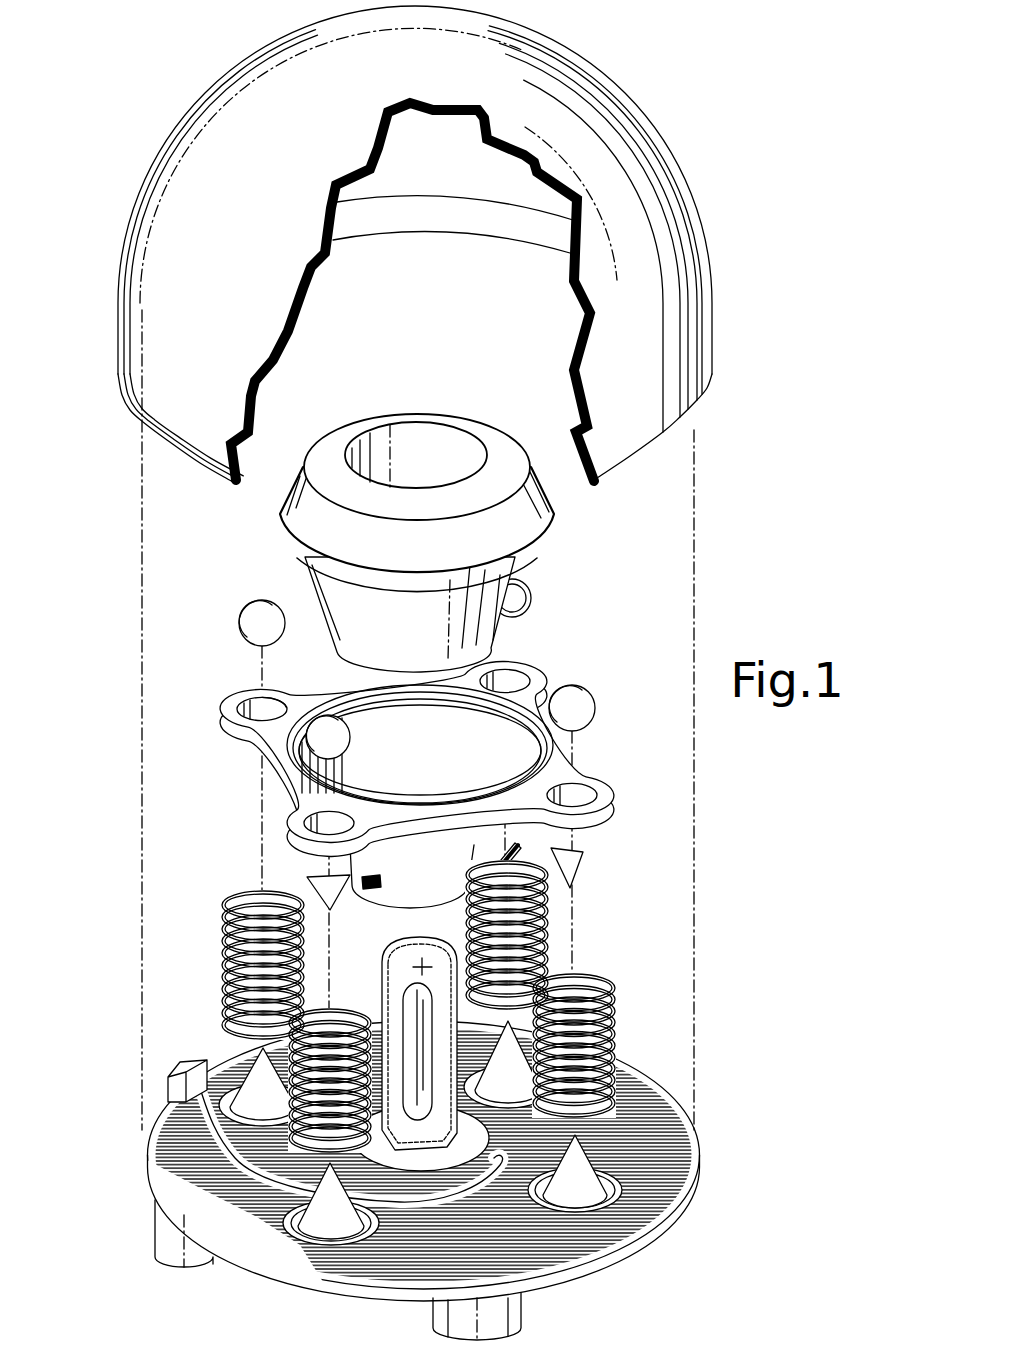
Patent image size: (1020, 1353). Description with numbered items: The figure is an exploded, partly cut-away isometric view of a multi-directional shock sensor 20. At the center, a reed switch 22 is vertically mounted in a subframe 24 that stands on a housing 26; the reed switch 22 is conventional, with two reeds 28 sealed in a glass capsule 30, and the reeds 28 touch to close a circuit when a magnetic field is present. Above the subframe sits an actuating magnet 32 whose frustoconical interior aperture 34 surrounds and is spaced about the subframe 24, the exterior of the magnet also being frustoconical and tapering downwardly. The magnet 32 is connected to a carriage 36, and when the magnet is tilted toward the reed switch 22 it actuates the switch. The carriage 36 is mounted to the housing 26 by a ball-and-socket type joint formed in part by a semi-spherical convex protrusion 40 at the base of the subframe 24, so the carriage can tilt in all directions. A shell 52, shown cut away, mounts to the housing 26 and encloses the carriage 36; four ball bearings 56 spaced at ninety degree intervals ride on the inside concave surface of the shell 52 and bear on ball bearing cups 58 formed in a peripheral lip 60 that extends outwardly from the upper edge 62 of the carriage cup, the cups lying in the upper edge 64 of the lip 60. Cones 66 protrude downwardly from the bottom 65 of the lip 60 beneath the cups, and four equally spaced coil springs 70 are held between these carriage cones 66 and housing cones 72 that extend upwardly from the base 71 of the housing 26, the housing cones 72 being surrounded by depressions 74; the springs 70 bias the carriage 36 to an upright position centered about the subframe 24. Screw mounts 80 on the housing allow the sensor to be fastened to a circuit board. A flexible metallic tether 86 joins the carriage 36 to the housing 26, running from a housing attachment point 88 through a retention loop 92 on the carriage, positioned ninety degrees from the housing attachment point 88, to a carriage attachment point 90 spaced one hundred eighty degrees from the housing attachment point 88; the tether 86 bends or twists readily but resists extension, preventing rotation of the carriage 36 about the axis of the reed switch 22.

The shock sensor 20 is at (128, 572).
The reed switch 22 is at (429, 1041).
The subframe 24 is at (429, 1030).
The housing 26 is at (416, 1163).
The reeds 28 is at (428, 1095).
The glass capsule 30 is at (386, 960).
The actuating magnet 32 is at (417, 509).
The frustoconical interior aperture 34 is at (370, 430).
The carriage 36 is at (417, 740).
The semi-spherical convex protrusion 40 is at (407, 1176).
The shell 52 is at (133, 275).
The ball bearings 56 is at (531, 596).
The ball bearing cups 58 is at (248, 700).
The peripheral lip 60 is at (222, 706).
The upper edge of the carriage cup 62 is at (282, 763).
The upper edge of the lip 64 is at (277, 701).
The bottom of the lip 65 is at (612, 818).
The carriage cones 66 is at (316, 892).
The coil springs 70 is at (222, 950).
The base of the housing 71 is at (312, 1274).
The housing cones 72 is at (284, 1220).
The depressions 74 is at (284, 1230).
The screw mounts 80 is at (523, 1312).
The tether 86 is at (160, 1112).
The housing attachment point 88 is at (190, 1062).
The carriage attachment point 90 is at (498, 864).
The retention loop 92 is at (372, 876).